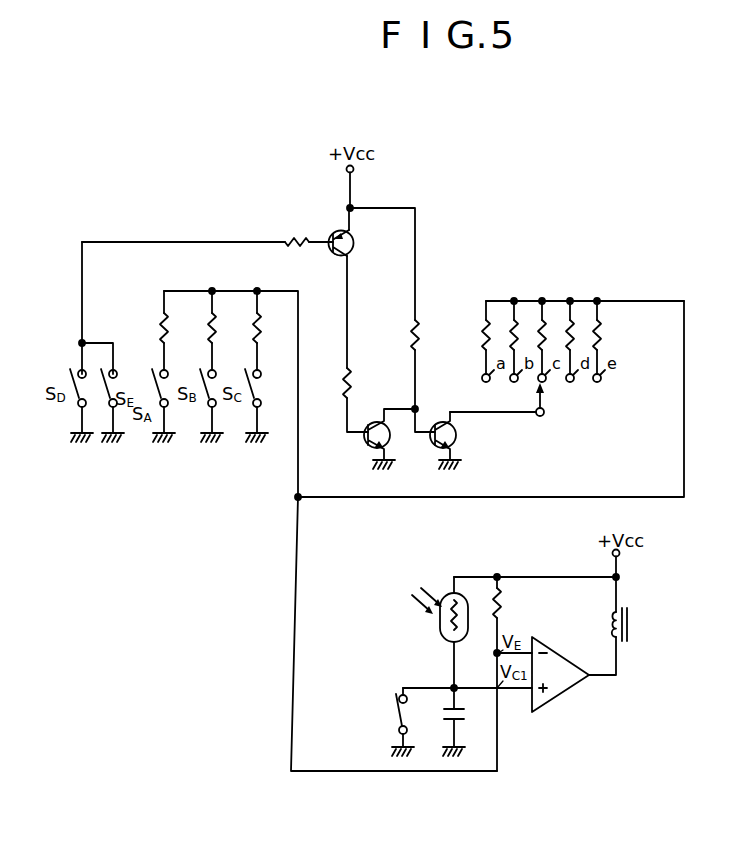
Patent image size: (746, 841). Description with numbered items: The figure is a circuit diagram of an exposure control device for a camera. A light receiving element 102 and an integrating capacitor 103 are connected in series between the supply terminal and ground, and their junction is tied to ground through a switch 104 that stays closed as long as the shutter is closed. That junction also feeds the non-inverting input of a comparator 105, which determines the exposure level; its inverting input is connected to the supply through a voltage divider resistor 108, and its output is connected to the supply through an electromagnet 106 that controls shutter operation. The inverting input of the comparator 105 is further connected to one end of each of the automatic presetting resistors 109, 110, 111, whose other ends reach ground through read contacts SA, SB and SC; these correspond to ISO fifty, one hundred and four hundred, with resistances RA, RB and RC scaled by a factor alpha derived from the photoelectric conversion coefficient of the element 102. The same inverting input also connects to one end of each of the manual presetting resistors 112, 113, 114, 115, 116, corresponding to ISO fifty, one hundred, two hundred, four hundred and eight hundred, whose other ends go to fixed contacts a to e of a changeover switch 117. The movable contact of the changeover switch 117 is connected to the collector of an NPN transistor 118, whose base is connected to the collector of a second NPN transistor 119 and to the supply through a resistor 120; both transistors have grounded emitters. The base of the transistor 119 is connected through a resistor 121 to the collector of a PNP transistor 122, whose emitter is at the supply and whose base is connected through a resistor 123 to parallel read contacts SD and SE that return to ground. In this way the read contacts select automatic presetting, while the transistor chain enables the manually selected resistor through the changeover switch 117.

The light receiving element 102 is at (462, 605).
The integrating capacitor 103 is at (456, 718).
The switch 104 is at (398, 708).
The comparator 105 is at (568, 692).
The electromagnet 106 is at (614, 632).
The voltage divider resistor 108 is at (499, 602).
The automatic presetting resistor 109 is at (162, 333).
The automatic presetting resistor 110 is at (209, 322).
The automatic presetting resistor 111 is at (252, 324).
The manual presetting resistor 112 is at (484, 327).
The manual presetting resistor 113 is at (510, 318).
The manual presetting resistor 114 is at (546, 312).
The manual presetting resistor 115 is at (580, 322).
The manual presetting resistor 116 is at (600, 330).
The changeover switch 117 is at (541, 406).
The NPN transistor 118 is at (445, 452).
The NPN transistor 119 is at (372, 450).
The resistor 120 is at (415, 334).
The resistor 121 is at (348, 379).
The PNP transistor 122 is at (353, 243).
The resistor 123 is at (292, 239).